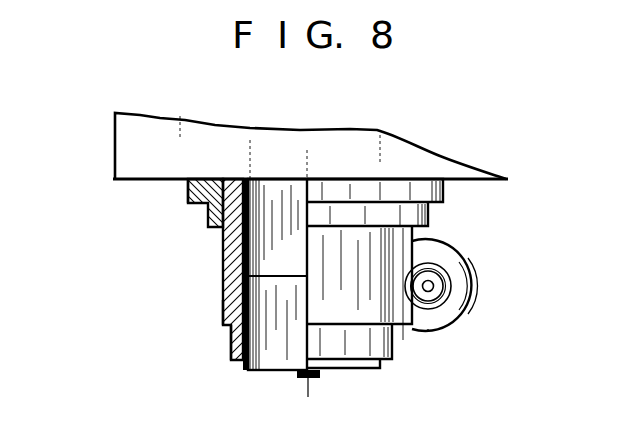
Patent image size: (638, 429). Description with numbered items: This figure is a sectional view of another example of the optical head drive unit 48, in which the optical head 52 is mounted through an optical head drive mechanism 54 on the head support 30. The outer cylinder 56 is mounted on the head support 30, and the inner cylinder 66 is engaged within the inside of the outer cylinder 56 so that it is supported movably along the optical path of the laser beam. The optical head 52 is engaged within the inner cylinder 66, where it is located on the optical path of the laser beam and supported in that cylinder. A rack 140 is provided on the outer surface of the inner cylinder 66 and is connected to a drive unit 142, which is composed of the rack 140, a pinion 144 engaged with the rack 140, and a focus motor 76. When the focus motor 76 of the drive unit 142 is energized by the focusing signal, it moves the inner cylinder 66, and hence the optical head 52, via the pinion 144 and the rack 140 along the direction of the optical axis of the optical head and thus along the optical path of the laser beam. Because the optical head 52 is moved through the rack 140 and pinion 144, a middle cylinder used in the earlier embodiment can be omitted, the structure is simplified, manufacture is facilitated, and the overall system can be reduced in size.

The head support 30 is at (115, 148).
The optical head drive unit 48 is at (126, 232).
The optical head 52 is at (270, 360).
The optical head drive mechanism 54 is at (200, 270).
The outer cylinder 56 is at (188, 191).
The inner cylinder 66 is at (222, 312).
The focus motor 76 is at (465, 312).
The rack 140 is at (425, 236).
The drive unit 142 is at (481, 265).
The pinion 144 is at (443, 332).